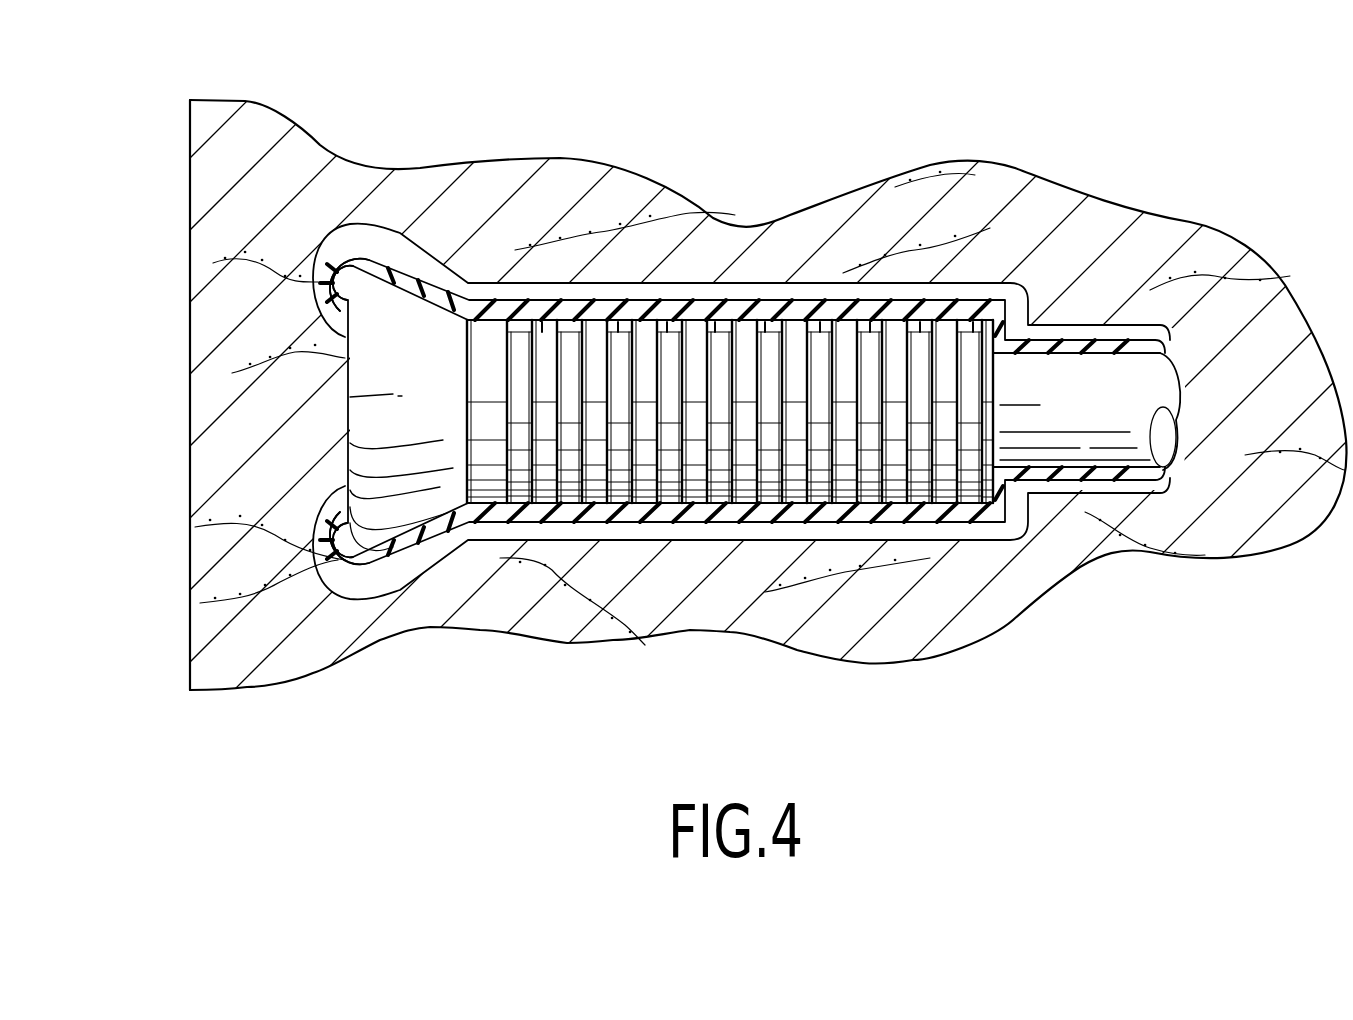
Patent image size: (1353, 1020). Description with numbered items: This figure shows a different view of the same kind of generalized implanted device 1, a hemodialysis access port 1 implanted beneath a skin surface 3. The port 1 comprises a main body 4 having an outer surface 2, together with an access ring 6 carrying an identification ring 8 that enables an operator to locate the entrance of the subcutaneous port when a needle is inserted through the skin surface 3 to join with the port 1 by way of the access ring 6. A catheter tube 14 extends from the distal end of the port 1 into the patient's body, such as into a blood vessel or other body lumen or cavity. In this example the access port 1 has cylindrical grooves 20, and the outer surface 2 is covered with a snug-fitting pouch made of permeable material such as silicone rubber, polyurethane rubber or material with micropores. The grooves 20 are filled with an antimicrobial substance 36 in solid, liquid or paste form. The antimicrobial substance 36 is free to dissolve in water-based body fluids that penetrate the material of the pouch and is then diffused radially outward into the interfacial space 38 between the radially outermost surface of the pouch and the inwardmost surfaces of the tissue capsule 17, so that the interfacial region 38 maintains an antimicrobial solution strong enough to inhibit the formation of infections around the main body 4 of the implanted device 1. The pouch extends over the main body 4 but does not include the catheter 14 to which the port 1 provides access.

The hemodialysis access port 1 is at (795, 240).
The outer surface 2 is at (846, 500).
The skin surface 3 is at (190, 147).
The main body 4 is at (995, 680).
The access ring 6 is at (416, 362).
The identification ring 8 is at (354, 240).
The catheter tube 14 is at (1117, 404).
The tissue capsule 17 is at (432, 248).
The cylindrical grooves 20 is at (973, 330).
The antimicrobial substance 36 is at (765, 332).
The interfacial space 38 is at (445, 262).